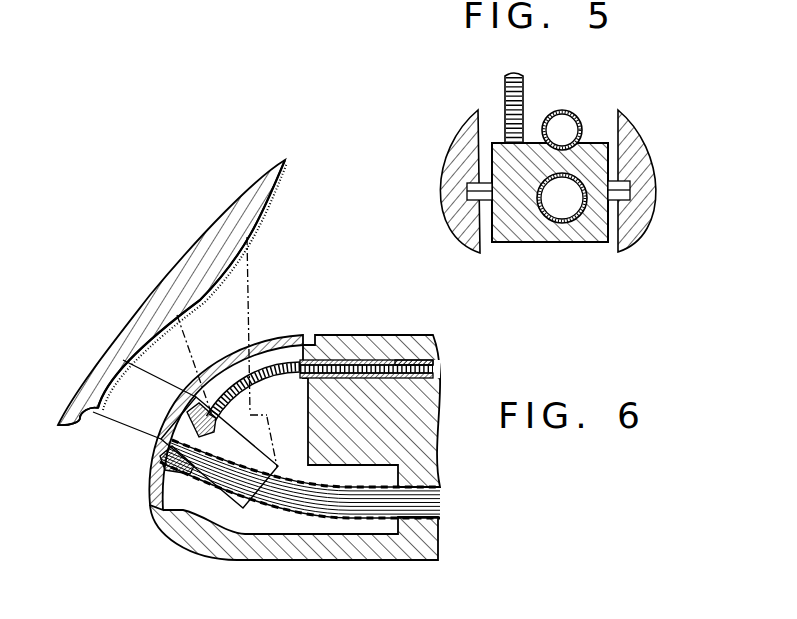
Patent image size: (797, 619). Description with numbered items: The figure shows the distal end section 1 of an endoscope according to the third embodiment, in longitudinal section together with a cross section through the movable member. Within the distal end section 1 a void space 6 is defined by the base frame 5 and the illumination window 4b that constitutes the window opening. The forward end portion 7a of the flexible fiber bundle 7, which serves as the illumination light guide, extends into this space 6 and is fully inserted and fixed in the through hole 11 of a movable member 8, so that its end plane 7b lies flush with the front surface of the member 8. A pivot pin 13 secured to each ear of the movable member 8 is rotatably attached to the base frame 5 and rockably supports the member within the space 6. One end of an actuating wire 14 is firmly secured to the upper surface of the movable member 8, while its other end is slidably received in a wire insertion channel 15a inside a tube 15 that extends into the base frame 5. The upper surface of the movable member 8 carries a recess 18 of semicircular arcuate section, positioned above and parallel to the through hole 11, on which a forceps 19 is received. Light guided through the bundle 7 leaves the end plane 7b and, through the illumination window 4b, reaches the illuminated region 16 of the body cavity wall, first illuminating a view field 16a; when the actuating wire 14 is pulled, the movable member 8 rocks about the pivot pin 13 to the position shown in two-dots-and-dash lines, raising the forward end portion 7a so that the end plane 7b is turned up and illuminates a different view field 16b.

In FIG. 6, the distal end section 1 is at (340, 335).
In FIG. 6, the illumination window 4b is at (268, 336).
In FIG. 5, the base frame 5 is at (450, 160).
In FIG. 6, the base frame 5 is at (368, 345).
In FIG. 6, the void space 6 is at (318, 545).
In FIG. 5, the flexible fiber bundle 7 is at (568, 215).
In FIG. 6, the flexible fiber bundle 7 is at (380, 505).
In FIG. 6, the forward end portion 7a is at (233, 482).
In FIG. 6, the end plane 7b is at (186, 416).
In FIG. 5, the movable member 8 is at (540, 235).
In FIG. 6, the movable member 8 is at (208, 478).
In FIG. 6, the through hole 11 is at (168, 471).
In FIG. 5, the pivot pin 13 is at (468, 191).
In FIG. 5, the actuating wire 14 is at (521, 90).
In FIG. 6, the actuating wire 14 is at (434, 370).
In FIG. 6, the tube 15 is at (436, 378).
In FIG. 6, the wire insertion channel 15a is at (400, 364).
In FIG. 6, the blade 16 is at (266, 192).
In FIG. 6, the view field 16a is at (92, 414).
In FIG. 6, the different view field 16b is at (232, 258).
In FIG. 5, the recess 18 is at (580, 115).
In FIG. 5, the forceps 19 is at (548, 115).